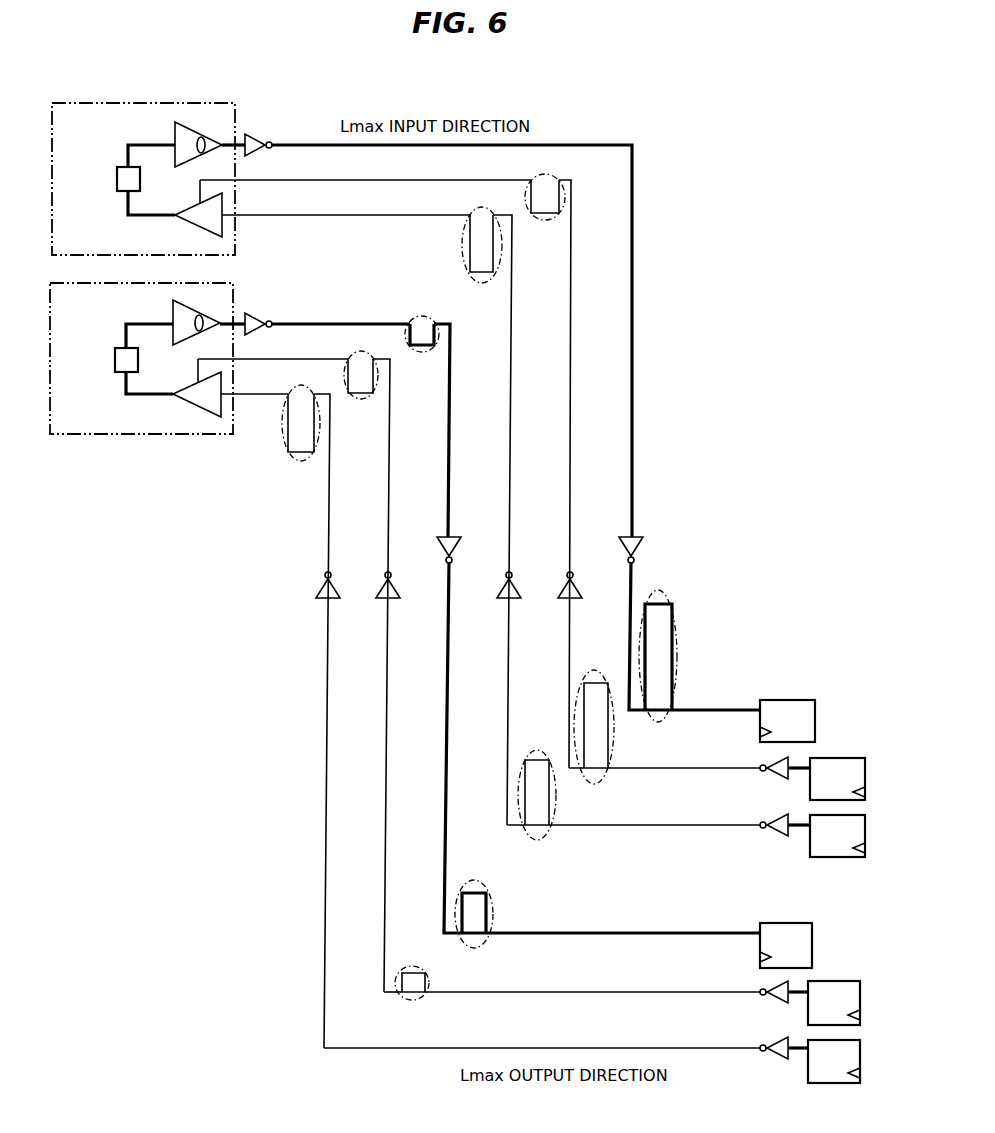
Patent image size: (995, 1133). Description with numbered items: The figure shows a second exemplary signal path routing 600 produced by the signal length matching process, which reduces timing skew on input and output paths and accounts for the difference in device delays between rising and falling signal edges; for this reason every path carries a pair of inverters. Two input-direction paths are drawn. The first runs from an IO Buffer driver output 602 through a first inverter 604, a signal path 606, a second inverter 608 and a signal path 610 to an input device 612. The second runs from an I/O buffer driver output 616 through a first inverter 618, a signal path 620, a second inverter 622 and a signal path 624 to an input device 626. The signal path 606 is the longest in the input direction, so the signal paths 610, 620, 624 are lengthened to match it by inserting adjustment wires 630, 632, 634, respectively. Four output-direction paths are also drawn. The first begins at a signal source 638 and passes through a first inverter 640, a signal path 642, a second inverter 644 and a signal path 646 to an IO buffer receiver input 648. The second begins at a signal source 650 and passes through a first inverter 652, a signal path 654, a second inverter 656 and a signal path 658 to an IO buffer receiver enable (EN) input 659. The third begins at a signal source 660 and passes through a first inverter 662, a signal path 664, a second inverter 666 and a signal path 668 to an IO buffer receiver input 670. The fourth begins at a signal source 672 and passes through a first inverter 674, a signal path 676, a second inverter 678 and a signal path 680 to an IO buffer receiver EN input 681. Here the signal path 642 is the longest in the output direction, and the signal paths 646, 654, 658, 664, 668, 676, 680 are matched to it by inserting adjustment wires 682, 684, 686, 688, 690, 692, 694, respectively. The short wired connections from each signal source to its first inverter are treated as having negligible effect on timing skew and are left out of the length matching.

The signal path routing 600 is at (712, 93).
The IO Buffer driver output 602 is at (230, 136).
The first inverter 604 is at (262, 150).
The signal path 606 is at (633, 340).
The second inverter 608 is at (637, 534).
The signal path 610 is at (727, 713).
The input device 612 is at (787, 700).
The I/O buffer driver output 616 is at (228, 315).
The first inverter 618 is at (260, 330).
The signal path 620 is at (451, 470).
The second inverter 622 is at (454, 533).
The signal path 624 is at (690, 937).
The input device 626 is at (780, 923).
The adjustment wire 630 is at (660, 603).
The adjustment wire 632 is at (422, 347).
The adjustment wire 634 is at (493, 912).
The signal source 638 is at (830, 1087).
The first inverter 640 is at (767, 1058).
The signal path 642 is at (397, 1052).
The second inverter 644 is at (321, 600).
The signal path 646 is at (331, 558).
The IO buffer receiver input 648 is at (231, 388).
The signal source 650 is at (833, 980).
The first inverter 652 is at (767, 1000).
The signal path 654 is at (690, 995).
The second inverter 656 is at (380, 600).
The signal path 658 is at (390, 512).
The IO buffer receiver enable (EN) input 659 is at (189, 398).
The signal source 660 is at (833, 860).
The first inverter 662 is at (763, 835).
The signal path 664 is at (693, 830).
The second inverter 666 is at (500, 600).
The signal path 668 is at (510, 428).
The IO buffer receiver input 670 is at (231, 210).
The signal source 672 is at (833, 758).
The first inverter 674 is at (763, 777).
The signal path 676 is at (693, 772).
The second inverter 678 is at (560, 600).
The signal path 680 is at (572, 385).
The IO buffer receiver EN input 681 is at (190, 218).
The adjustment wire 682 is at (290, 460).
The adjustment wire 684 is at (433, 978).
The adjustment wire 686 is at (362, 400).
The adjustment wire 688 is at (532, 760).
The adjustment wire 690 is at (463, 243).
The adjustment wire 692 is at (596, 683).
The adjustment wire 694 is at (540, 222).